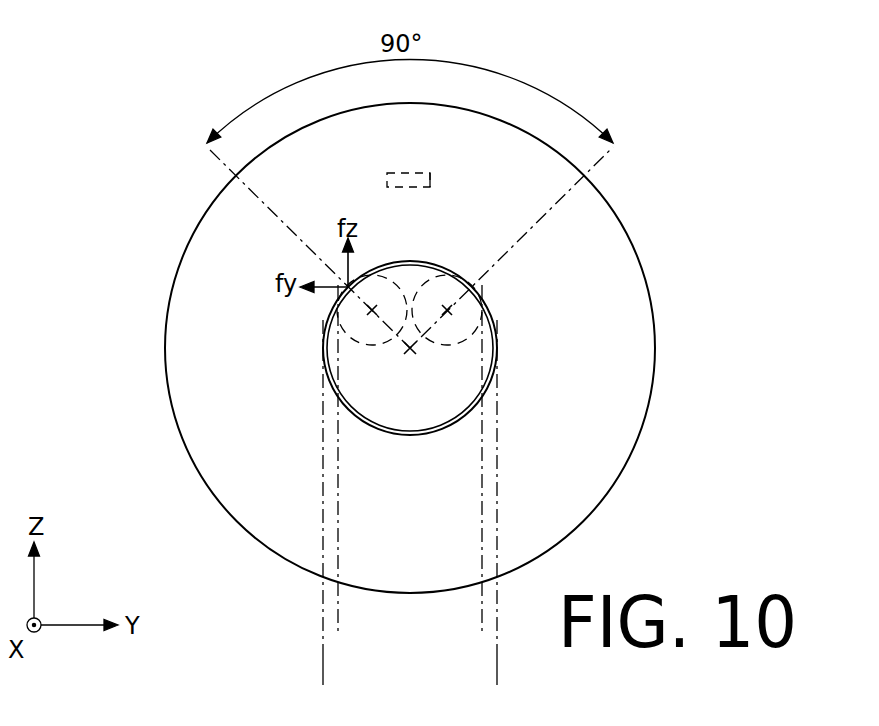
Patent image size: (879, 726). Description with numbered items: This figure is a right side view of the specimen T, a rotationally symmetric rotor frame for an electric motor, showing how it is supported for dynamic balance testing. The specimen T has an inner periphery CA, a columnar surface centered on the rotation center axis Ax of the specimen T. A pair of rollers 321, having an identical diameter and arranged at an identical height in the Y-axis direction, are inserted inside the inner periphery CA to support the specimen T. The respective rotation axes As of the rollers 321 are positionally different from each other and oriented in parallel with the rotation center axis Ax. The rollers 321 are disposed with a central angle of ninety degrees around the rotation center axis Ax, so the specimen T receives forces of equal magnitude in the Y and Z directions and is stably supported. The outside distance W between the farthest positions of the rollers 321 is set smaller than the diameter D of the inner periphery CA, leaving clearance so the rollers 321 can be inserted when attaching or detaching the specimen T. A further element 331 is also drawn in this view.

The specimen T is at (193, 218).
The inner periphery CA is at (424, 432).
The rotation center axis Ax is at (410, 349).
The rotation axis of roller As is at (372, 312).
The roller 321 is at (378, 347).
The second suction port (30A) 331 is at (430, 180).
The outside distance W is at (482, 633).
The diameter of inner periphery D is at (497, 648).